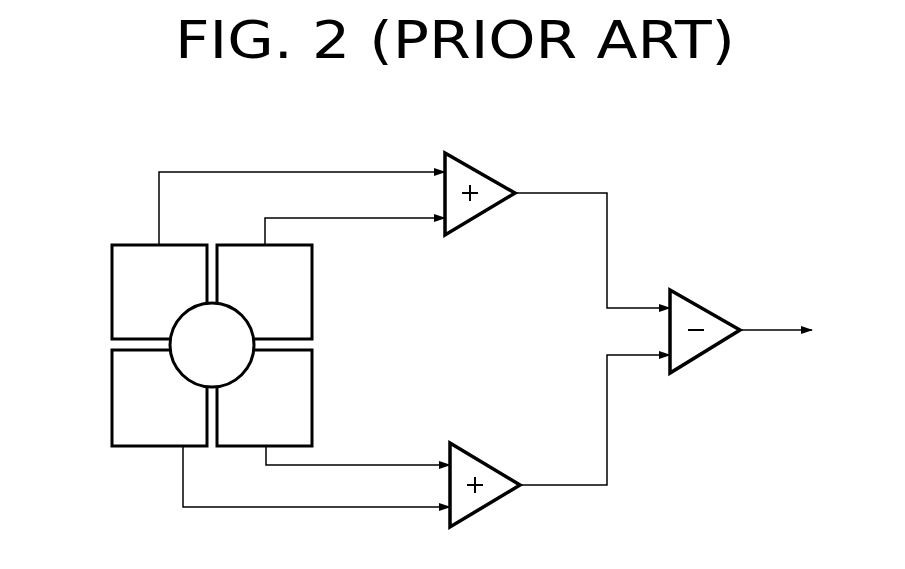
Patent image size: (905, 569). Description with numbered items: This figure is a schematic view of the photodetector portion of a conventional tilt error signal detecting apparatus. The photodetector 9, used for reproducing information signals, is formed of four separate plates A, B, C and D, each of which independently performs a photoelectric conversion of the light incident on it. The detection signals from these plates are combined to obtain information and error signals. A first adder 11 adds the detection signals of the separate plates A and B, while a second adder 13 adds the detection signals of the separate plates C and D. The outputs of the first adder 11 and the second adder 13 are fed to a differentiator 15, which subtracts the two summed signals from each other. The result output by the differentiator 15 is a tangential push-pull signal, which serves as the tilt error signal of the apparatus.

The photodetector 9 is at (105, 239).
The first adder 11 is at (483, 172).
The second adder 13 is at (486, 465).
The differentiator 15 is at (707, 309).